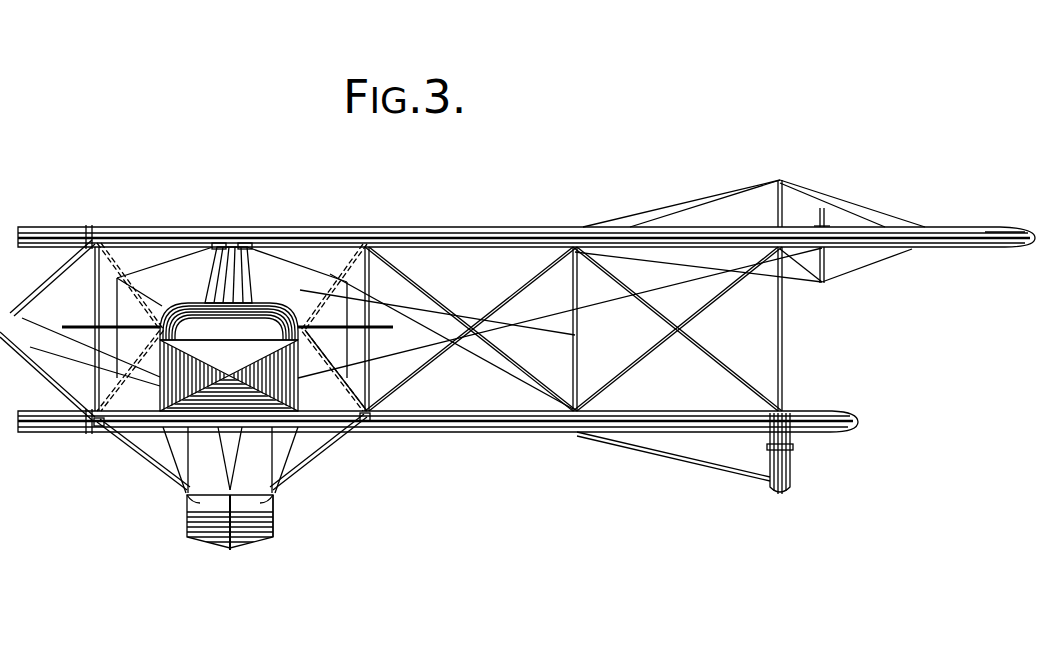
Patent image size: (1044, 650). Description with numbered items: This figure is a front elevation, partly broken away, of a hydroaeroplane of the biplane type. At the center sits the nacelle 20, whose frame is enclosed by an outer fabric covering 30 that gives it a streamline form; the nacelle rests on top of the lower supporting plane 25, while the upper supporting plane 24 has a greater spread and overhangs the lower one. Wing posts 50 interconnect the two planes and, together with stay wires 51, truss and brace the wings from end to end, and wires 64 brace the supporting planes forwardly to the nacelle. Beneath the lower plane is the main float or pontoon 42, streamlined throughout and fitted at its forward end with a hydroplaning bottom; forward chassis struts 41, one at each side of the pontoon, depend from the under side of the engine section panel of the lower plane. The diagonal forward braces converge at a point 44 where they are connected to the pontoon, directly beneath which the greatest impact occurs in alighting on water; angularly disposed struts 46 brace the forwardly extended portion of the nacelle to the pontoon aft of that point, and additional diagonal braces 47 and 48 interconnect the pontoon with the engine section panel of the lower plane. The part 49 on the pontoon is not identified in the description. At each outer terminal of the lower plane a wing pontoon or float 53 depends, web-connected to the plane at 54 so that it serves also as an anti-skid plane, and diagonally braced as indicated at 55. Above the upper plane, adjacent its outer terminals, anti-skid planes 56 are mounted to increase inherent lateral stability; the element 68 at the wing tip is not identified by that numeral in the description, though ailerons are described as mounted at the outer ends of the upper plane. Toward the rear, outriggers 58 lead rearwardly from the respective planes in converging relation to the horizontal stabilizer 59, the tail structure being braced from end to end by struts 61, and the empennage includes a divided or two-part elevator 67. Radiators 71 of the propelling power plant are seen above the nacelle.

The nacelle 20 is at (229, 321).
The upper supporting plane 24 is at (445, 228).
The lower supporting plane 25 is at (243, 452).
The outer fabric covering 30 is at (229, 376).
The forward landing gear struts 41 is at (188, 468).
The main float 42 is at (274, 513).
The convergence point 44 is at (212, 502).
The angularly disposed struts 46 is at (170, 458).
The diagonal brace 47 is at (120, 447).
The diagonal brace 48 is at (108, 438).
The float bottom 49 is at (250, 528).
The wing posts 50 is at (783, 331).
The stay wires 51 is at (652, 355).
The wing float 53 is at (790, 474).
The web connection 54 is at (768, 464).
The float diagonal bracing 55 is at (710, 462).
The anti-skid planes 56 is at (784, 200).
The outriggers 58 is at (343, 257).
The horizontal stabilizer 59 is at (311, 313).
The tail bracing struts 61 is at (346, 304).
The bracing wires 64 is at (118, 277).
The elevator 67 is at (412, 312).
The wing tip 68 is at (989, 249).
The radiators 71 is at (257, 246).